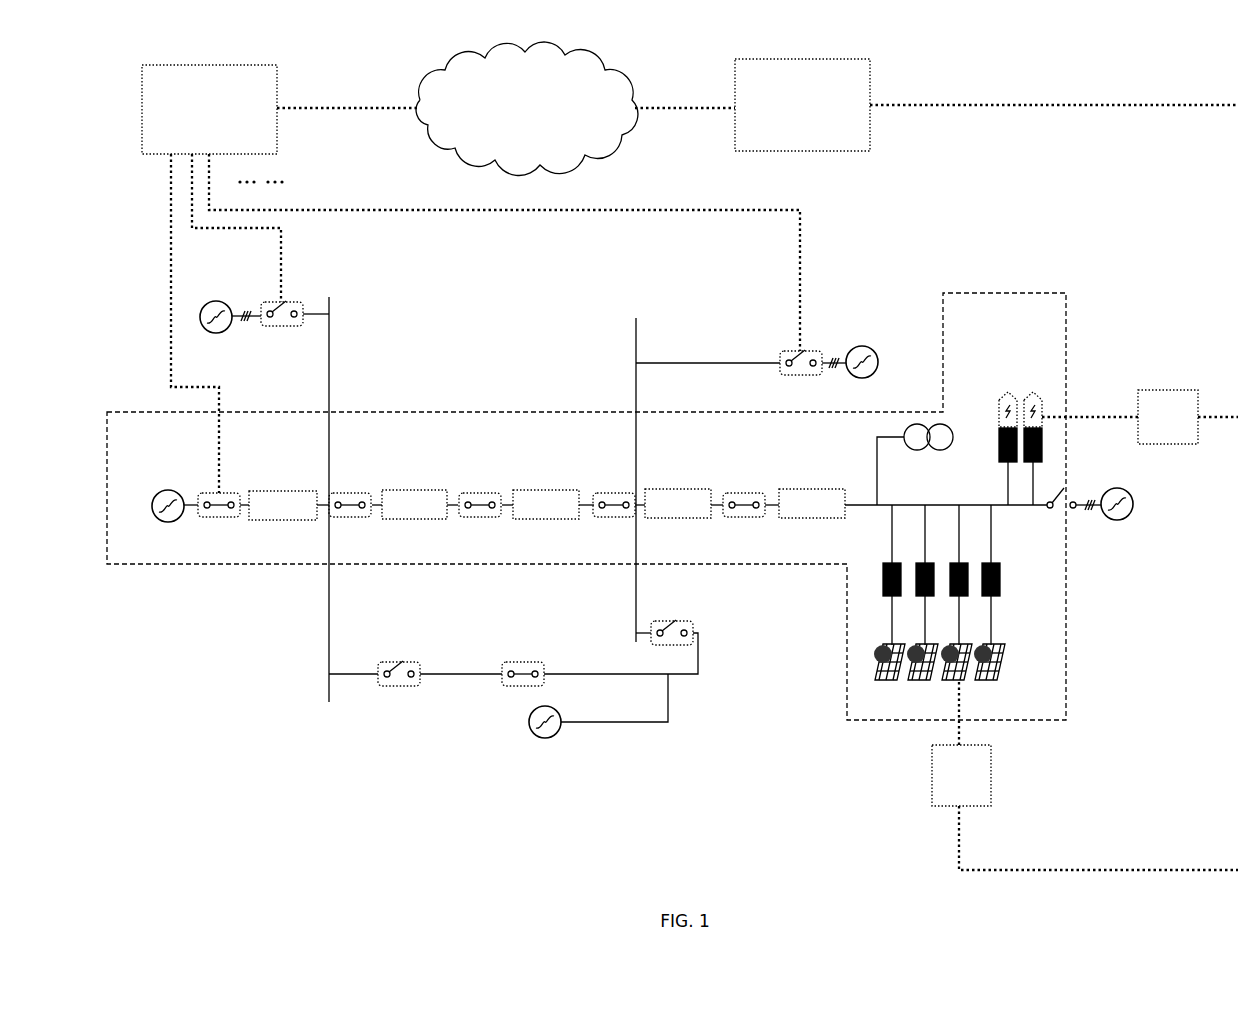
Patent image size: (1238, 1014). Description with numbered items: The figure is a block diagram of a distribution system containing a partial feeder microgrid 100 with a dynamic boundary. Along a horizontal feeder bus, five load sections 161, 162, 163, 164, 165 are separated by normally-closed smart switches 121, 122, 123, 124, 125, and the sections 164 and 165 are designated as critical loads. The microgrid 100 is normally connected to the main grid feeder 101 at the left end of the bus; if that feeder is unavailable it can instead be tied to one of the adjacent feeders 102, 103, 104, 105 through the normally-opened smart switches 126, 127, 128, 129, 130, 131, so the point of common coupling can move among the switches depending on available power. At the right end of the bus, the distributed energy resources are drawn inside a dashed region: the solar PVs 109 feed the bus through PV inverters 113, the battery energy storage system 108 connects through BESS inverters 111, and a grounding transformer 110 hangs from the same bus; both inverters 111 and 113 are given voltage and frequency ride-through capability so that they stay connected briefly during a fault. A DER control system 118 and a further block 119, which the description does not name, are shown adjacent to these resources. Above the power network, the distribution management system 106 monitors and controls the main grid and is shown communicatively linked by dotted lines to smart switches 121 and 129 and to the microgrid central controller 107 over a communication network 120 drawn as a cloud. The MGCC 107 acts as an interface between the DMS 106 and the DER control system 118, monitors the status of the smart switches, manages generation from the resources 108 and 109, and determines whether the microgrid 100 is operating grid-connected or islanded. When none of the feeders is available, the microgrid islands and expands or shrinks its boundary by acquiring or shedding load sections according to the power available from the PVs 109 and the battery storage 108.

The microgrid 100 is at (187, 567).
The main grid feeder 101 is at (162, 491).
The feeder 102 is at (554, 738).
The feeder 103 is at (211, 300).
The feeder 104 is at (1127, 517).
The feeder 105 is at (871, 349).
The distribution management system 106 is at (254, 64).
The microgrid central controller 107 is at (835, 59).
The battery energy storage system 108 is at (1013, 391).
The solar PVs 109 is at (966, 680).
The grounding transformer 110 is at (920, 451).
The BESS inverters 111 is at (1043, 444).
The PV inverters 113 is at (1001, 582).
The DER control system 118 is at (1165, 389).
The controller 119 is at (932, 773).
The communication network 120 is at (617, 68).
The smart switch 121 is at (233, 519).
The smart switch 122 is at (362, 519).
The smart switch 123 is at (497, 519).
The smart switch 124 is at (632, 519).
The smart switch 125 is at (740, 519).
The smart switch 126 is at (391, 688).
The smart switch 127 is at (536, 660).
The smart switch 128 is at (691, 625).
The smart switch 129 is at (282, 328).
The smart switch 130 is at (1048, 508).
The smart switch 131 is at (795, 376).
The load section 161 is at (266, 490).
The load section 162 is at (420, 488).
The load section 163 is at (563, 488).
The load section 164 is at (694, 488).
The load section 165 is at (797, 488).